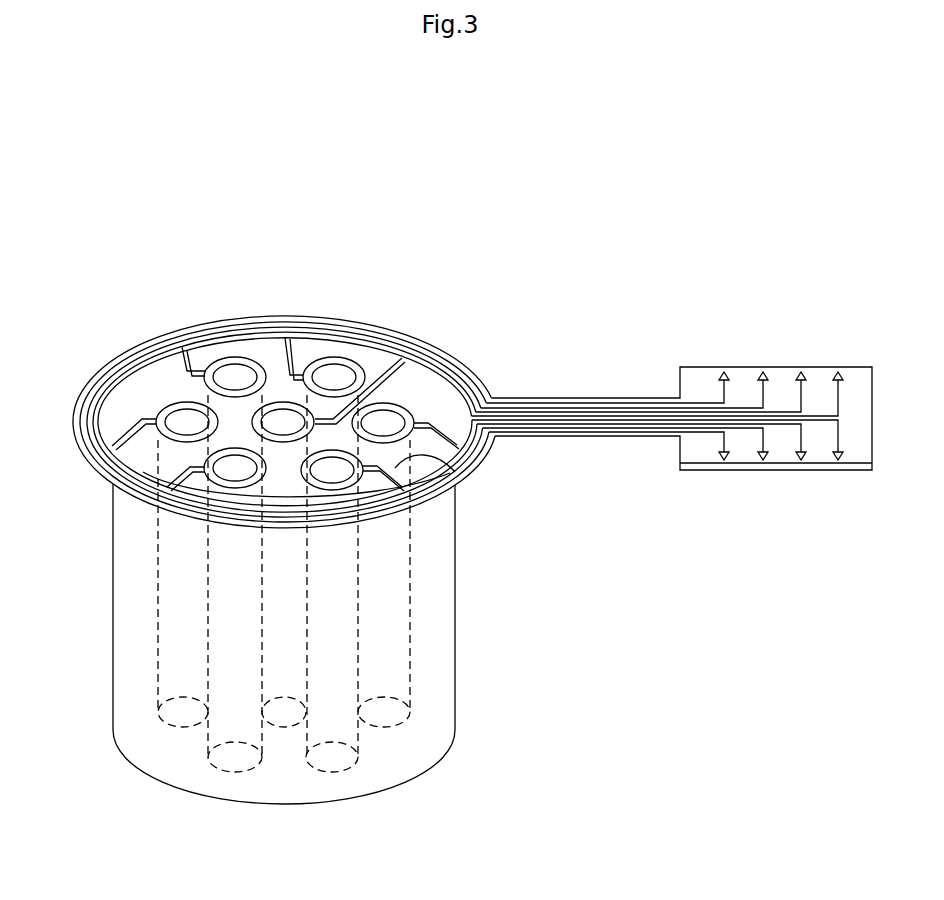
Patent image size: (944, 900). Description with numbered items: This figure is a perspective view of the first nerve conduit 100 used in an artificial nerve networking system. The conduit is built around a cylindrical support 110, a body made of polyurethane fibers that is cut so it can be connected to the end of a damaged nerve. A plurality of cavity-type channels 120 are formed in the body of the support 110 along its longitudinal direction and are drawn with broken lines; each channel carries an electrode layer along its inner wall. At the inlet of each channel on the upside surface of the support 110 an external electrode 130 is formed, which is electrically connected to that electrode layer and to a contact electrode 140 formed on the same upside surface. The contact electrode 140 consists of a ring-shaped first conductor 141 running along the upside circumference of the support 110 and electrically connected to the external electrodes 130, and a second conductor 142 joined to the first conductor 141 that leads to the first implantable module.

The first nerve conduit 100 is at (448, 510).
The support 110 is at (133, 598).
The channels 120 is at (168, 655).
The external electrode 130 is at (128, 435).
The contact electrode 140 is at (547, 400).
The first conductor 141 is at (200, 333).
The second conductor 142 is at (613, 407).